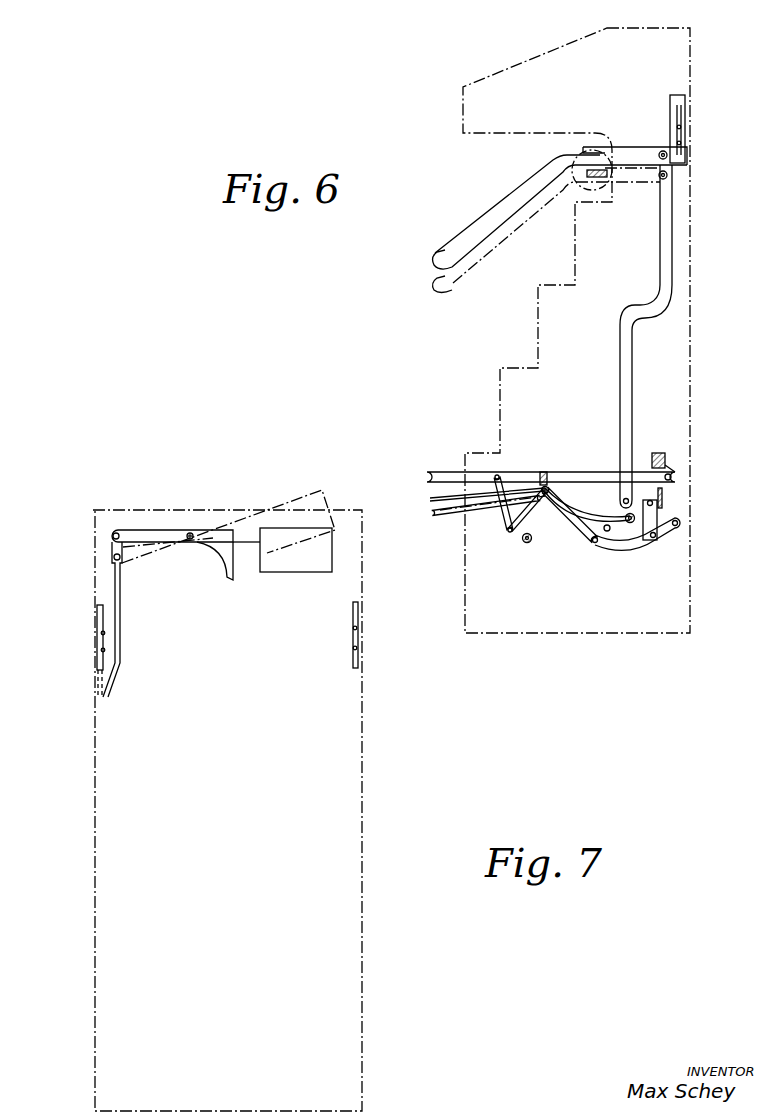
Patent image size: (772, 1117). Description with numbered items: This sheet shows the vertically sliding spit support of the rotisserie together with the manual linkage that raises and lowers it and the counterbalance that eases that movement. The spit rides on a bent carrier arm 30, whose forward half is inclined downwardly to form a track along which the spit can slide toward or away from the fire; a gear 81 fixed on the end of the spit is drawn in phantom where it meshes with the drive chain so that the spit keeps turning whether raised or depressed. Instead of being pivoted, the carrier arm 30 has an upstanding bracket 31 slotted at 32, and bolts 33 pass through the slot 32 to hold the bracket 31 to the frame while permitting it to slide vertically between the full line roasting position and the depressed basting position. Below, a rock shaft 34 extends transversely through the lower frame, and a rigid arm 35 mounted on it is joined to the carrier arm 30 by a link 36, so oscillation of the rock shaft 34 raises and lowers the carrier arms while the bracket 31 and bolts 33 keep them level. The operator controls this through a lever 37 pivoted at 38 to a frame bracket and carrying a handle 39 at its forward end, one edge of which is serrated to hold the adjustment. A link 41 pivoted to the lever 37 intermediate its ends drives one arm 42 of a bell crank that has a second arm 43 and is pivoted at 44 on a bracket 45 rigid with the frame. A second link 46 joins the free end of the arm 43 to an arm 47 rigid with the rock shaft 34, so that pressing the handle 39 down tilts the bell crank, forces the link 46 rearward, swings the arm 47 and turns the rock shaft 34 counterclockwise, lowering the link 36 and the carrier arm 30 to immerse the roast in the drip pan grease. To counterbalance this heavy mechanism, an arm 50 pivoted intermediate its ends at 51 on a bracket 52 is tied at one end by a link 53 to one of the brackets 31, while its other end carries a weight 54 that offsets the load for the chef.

In FIG. 7, the carrier arm 30 is at (482, 222).
In FIG. 7, the upstanding bracket 31 is at (682, 100).
In FIG. 6, the upstanding bracket 31 is at (97, 610).
In FIG. 7, the slot 32 is at (685, 112).
In FIG. 7, the bolts 33 is at (683, 143).
In FIG. 6, the bolts 33 is at (104, 633).
In FIG. 7, the rock shaft 34 is at (661, 498).
In FIG. 7, the rigid arm 35 is at (638, 500).
In FIG. 7, the link 36 is at (627, 360).
In FIG. 7, the lever 37 is at (548, 481).
In FIG. 7, the pivot 38 is at (673, 473).
In FIG. 7, the handle 39 is at (438, 473).
In FIG. 7, the link 41 is at (430, 499).
In FIG. 7, the bell crank arm 42 is at (527, 542).
In FIG. 7, the bell crank arm 43 is at (583, 533).
In FIG. 7, the pivot 44 is at (550, 487).
In FIG. 7, the bracket 45 is at (540, 473).
In FIG. 7, the second link 46 is at (613, 543).
In FIG. 7, the arm 47 is at (657, 520).
In FIG. 6, the arm 50 is at (150, 530).
In FIG. 6, the pivot 51 is at (192, 533).
In FIG. 6, the bracket 52 is at (227, 577).
In FIG. 6, the link 53 is at (113, 580).
In FIG. 6, the counterbalance weight 54 is at (285, 562).
In FIG. 7, the gear 81 is at (592, 190).